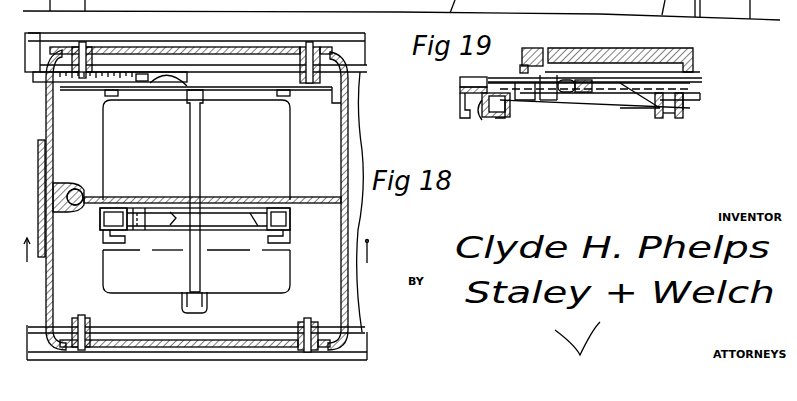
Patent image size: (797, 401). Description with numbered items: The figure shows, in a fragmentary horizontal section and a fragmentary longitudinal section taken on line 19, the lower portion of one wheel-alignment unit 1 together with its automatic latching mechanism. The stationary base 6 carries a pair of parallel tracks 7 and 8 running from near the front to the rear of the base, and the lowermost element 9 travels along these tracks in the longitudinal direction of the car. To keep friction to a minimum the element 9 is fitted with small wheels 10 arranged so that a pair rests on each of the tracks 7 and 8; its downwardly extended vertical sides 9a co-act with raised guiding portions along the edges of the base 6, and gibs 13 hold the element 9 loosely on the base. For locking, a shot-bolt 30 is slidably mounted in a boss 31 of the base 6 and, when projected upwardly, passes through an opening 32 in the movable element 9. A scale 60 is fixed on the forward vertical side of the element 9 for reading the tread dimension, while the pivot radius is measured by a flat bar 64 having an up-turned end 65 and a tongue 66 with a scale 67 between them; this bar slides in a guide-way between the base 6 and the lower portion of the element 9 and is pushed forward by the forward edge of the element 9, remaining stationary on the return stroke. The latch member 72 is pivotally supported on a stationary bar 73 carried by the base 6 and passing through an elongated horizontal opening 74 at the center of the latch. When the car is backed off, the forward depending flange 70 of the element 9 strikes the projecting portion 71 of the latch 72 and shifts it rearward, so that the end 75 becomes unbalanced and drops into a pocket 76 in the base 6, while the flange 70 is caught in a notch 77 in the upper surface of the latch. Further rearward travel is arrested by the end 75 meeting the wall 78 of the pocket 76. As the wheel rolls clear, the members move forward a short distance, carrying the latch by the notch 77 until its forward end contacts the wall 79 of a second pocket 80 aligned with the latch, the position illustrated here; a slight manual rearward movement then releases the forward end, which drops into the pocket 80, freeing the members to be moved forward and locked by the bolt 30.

In FIG. 18, the housing 1 is at (208, 200).
In FIG. 18, the stationary base 6 is at (360, 120).
In FIG. 19, the stationary base 6 is at (702, 97).
In FIG. 18, the track 7 is at (362, 69).
In FIG. 18, the track 8 is at (357, 337).
In FIG. 18, the lowermost element 9 is at (348, 295).
In FIG. 19, the lowermost element 9 is at (695, 58).
In FIG. 18, the vertical sides 9a is at (280, 50).
In FIG. 19, the vertical sides 9a is at (620, 70).
In FIG. 18, the small wheels 10 is at (125, 50).
In FIG. 18, the gibs 13 is at (362, 45).
In FIG. 19, the gibs 13 is at (697, 78).
In FIG. 18, the section line 19 is at (206, 257).
In FIG. 18, the shot-bolt 30 is at (73, 188).
In FIG. 19, the shot-bolt 30 is at (466, 120).
In FIG. 19, the boss 31 is at (458, 106).
In FIG. 18, the opening 32 is at (82, 188).
In FIG. 19, the opening 32 is at (552, 58).
In FIG. 18, the scale 60 is at (43, 167).
In FIG. 18, the flat bar 64 is at (168, 84).
In FIG. 19, the flat bar 64 is at (458, 85).
In FIG. 18, the up-turned end 65 is at (33, 114).
In FIG. 18, the tongue 66 is at (173, 79).
In FIG. 18, the scale 67 is at (103, 82).
In FIG. 18, the forward depending flange 70 is at (53, 127).
In FIG. 19, the forward depending flange 70 is at (518, 68).
In FIG. 18, the projecting portion 71 is at (148, 222).
In FIG. 19, the projecting portion 71 is at (545, 100).
In FIG. 18, the latch member 72 is at (158, 222).
In FIG. 19, the latch member 72 is at (592, 100).
In FIG. 18, the stationary bar 73 is at (200, 163).
In FIG. 19, the stationary bar 73 is at (580, 95).
In FIG. 18, the elongated horizontal opening 74 is at (172, 222).
In FIG. 19, the elongated horizontal opening 74 is at (562, 95).
In FIG. 18, the end of the latch 75 is at (255, 223).
In FIG. 19, the end of the latch 75 is at (632, 100).
In FIG. 18, the pocket 76 is at (285, 231).
In FIG. 19, the pocket 76 is at (680, 117).
In FIG. 18, the notch 77 is at (133, 222).
In FIG. 19, the notch 77 is at (527, 100).
In FIG. 18, the wall 78 is at (290, 218).
In FIG. 19, the wall 78 is at (686, 104).
In FIG. 18, the wall 79 is at (100, 219).
In FIG. 19, the wall 79 is at (480, 120).
In FIG. 18, the pocket 80 is at (103, 237).
In FIG. 19, the pocket 80 is at (500, 120).